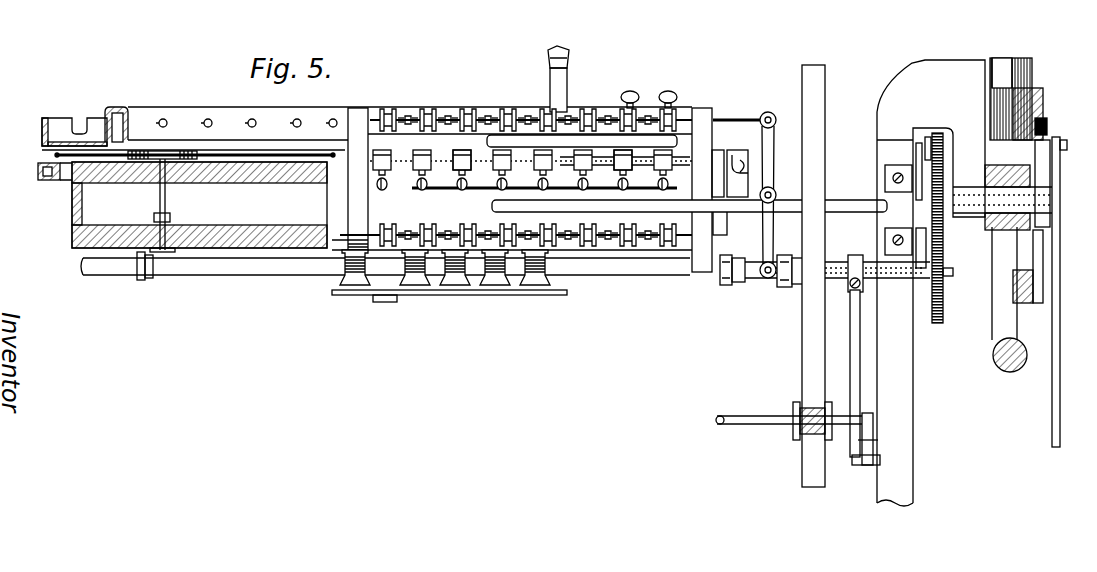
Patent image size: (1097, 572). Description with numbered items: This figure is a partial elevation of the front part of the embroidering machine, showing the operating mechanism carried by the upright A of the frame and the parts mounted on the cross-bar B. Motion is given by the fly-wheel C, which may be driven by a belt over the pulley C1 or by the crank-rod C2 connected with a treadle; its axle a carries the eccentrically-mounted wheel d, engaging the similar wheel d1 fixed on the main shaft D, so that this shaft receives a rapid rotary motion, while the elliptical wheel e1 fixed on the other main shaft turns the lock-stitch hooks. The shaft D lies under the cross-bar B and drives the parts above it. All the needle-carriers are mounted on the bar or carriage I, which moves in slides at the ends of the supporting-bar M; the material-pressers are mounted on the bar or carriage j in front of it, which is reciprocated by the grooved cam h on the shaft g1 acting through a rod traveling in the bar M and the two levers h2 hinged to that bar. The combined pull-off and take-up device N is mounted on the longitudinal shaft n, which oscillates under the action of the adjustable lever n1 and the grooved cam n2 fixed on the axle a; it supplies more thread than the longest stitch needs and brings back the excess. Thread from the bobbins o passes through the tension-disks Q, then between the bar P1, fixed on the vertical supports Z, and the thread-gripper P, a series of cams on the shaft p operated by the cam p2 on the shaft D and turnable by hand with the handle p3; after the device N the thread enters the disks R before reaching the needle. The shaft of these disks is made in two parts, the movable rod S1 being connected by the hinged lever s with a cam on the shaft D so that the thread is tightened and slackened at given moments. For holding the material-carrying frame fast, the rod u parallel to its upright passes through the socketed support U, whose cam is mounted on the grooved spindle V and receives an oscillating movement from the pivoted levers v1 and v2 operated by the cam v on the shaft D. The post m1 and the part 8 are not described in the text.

The bar or carriage I is at (398, 124).
The bar or carriage j is at (74, 122).
The levers h2 is at (231, 156).
The grooved cam h is at (172, 160).
The cross-bar B is at (100, 228).
The supporting-bar M is at (38, 171).
The shaft g1 is at (170, 209).
The main shaft D is at (203, 273).
The vertical supports Z is at (530, 190).
The post m1 is at (569, 72).
The disks R is at (531, 109).
The combined pull-off and take-up device N is at (582, 141).
The thread-gripper P is at (525, 172).
The shaft p is at (487, 158).
The bar P1 is at (644, 163).
The longitudinal shaft n is at (817, 198).
The tension-disks Q is at (425, 226).
The bobbins o is at (358, 288).
The rod S1 is at (740, 117).
The hinged lever s is at (771, 158).
The handle p3 is at (734, 173).
The cam p2 is at (723, 280).
The sleeve 8 is at (782, 290).
The rod u is at (813, 276).
The upright A is at (915, 402).
The adjustable lever n1 is at (915, 157).
The grooved cam n2 is at (932, 152).
The eccentrically-mounted wheel d is at (944, 172).
The eccentrically-mounted wheel d1 is at (944, 312).
The elliptical wheel e1 is at (917, 233).
The axle a is at (1006, 197).
The fly-wheel C is at (1022, 72).
The pulley C1 is at (1045, 102).
The crank-rod C2 is at (1061, 417).
The cam v is at (860, 290).
The pivoted lever v2 is at (852, 378).
The pivoted lever v1 is at (875, 444).
The socketed support U is at (797, 403).
The grooved spindle V is at (753, 418).